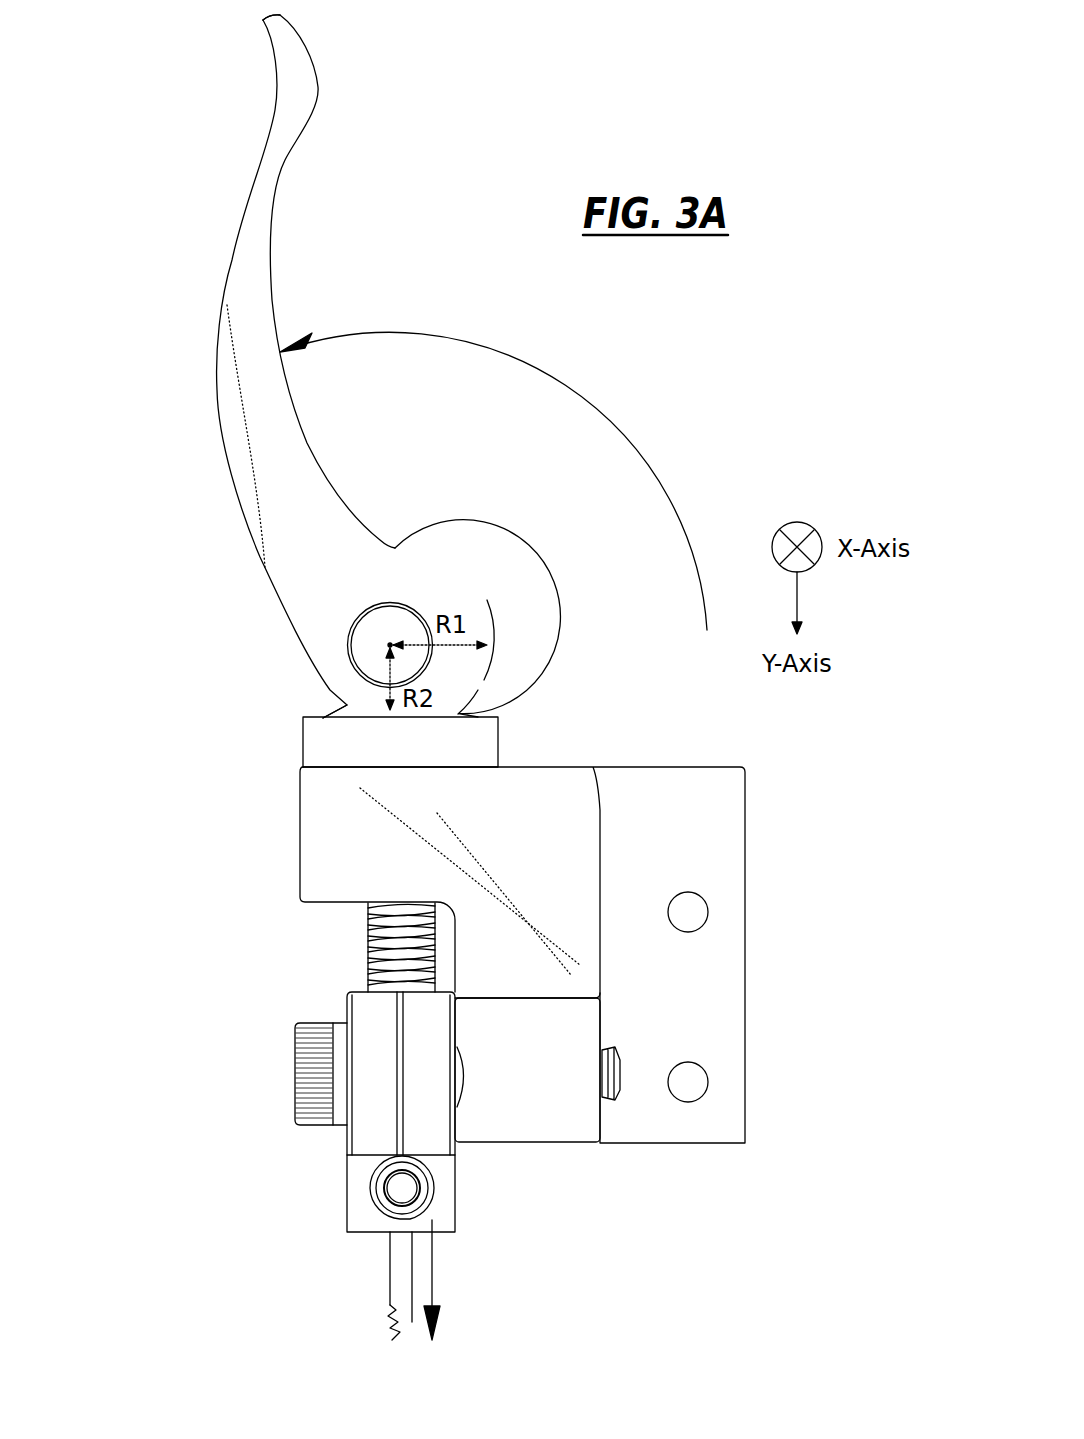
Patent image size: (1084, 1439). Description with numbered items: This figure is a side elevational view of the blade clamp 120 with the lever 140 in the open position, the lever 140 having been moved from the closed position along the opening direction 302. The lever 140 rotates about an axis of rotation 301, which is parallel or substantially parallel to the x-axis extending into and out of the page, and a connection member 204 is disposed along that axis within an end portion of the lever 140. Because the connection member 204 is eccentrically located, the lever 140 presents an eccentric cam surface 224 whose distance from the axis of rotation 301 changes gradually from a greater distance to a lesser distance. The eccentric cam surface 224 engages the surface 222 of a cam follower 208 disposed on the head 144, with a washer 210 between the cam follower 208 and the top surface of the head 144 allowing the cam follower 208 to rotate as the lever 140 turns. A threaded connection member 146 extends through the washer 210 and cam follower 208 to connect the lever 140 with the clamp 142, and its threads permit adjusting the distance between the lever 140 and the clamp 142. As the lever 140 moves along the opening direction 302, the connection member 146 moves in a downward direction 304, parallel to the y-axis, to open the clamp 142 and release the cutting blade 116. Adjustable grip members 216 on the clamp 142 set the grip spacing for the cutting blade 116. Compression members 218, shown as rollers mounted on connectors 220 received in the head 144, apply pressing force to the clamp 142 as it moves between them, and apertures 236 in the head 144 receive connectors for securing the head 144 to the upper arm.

The blade clamp 120 is at (205, 180).
The lever 140 is at (297, 498).
The connection member 204 is at (365, 638).
The cam follower 208 is at (343, 705).
The axis of rotation 301 is at (388, 640).
The opening direction 302 is at (570, 372).
The eccentric cam surface 224 is at (487, 636).
The surface of the cam follower 222 is at (463, 712).
The washer 210 is at (500, 748).
The head 144 is at (330, 833).
The apertures 236 is at (688, 915).
The threaded connection member 146 is at (370, 950).
The connector 220 is at (310, 1107).
The compression member 218 is at (367, 1140).
The adjustable grip member 216 is at (403, 1187).
The clamp 142 is at (355, 1218).
The cutting blade 116 is at (402, 1275).
The downward direction 304 is at (433, 1292).